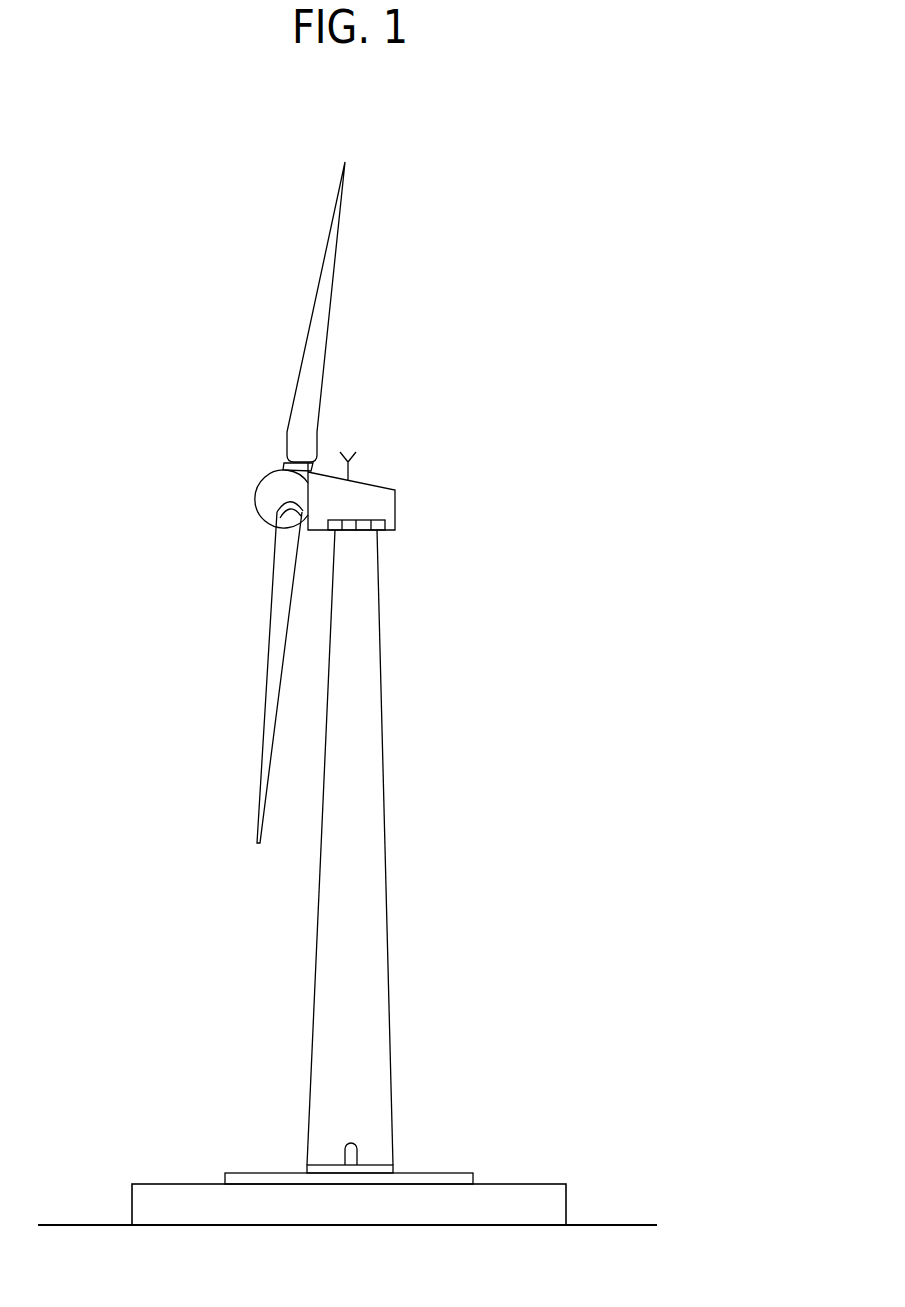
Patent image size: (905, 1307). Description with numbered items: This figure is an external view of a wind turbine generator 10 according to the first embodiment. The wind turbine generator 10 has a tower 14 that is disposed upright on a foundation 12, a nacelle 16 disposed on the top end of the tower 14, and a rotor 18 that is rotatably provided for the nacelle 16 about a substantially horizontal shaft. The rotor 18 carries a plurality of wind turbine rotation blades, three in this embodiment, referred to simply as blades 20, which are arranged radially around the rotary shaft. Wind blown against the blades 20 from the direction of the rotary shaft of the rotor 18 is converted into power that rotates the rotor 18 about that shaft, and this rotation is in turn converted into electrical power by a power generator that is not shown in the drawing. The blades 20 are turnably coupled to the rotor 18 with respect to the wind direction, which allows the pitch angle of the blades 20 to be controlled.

The wind turbine generator 10 is at (505, 432).
The foundation 12 is at (533, 1183).
The tower 14 is at (382, 702).
The nacelle 16 is at (410, 445).
The rotor 18 is at (255, 493).
The blades 20 is at (335, 263).